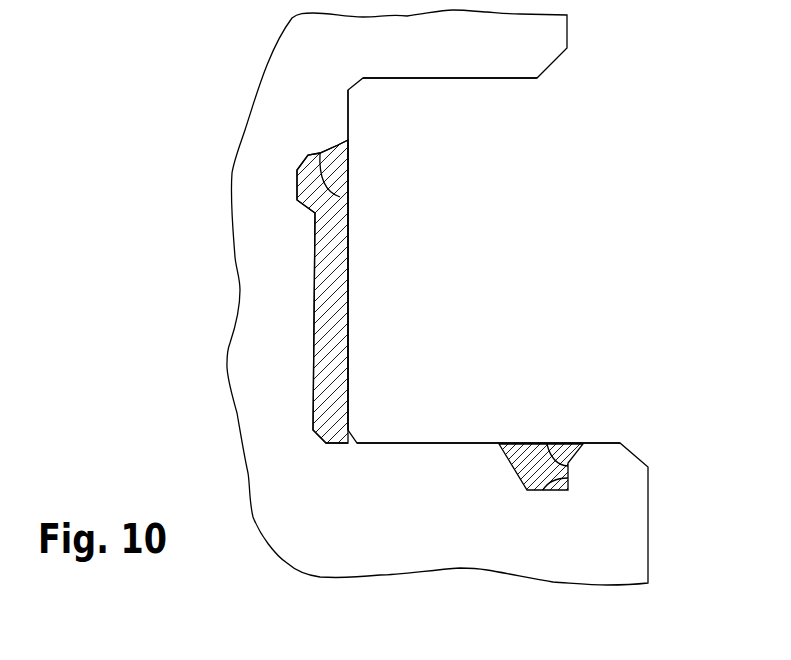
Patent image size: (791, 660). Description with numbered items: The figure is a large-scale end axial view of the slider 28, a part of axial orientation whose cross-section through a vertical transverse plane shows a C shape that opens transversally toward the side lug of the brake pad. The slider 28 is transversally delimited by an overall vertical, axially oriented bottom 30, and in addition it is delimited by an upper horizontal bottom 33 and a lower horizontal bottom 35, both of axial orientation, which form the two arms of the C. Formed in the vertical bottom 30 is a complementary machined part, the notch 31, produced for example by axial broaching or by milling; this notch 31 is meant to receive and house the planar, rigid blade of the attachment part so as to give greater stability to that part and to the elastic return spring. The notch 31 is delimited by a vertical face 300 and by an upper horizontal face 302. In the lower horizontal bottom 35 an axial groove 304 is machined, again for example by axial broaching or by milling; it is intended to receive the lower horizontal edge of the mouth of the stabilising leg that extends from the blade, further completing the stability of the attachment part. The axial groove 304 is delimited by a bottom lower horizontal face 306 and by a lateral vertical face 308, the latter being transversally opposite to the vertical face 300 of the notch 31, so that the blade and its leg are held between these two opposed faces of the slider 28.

The slider 28 is at (547, 160).
The vertical bottom 30 is at (352, 123).
The notch 31 is at (317, 282).
The upper horizontal bottom 33 is at (455, 80).
The lower horizontal bottom 35 is at (452, 440).
The vertical face 300 is at (313, 352).
The upper horizontal face 302 is at (330, 200).
The axial groove 304 is at (530, 468).
The bottom lower horizontal face 306 is at (568, 476).
The lateral vertical face 308 is at (548, 445).